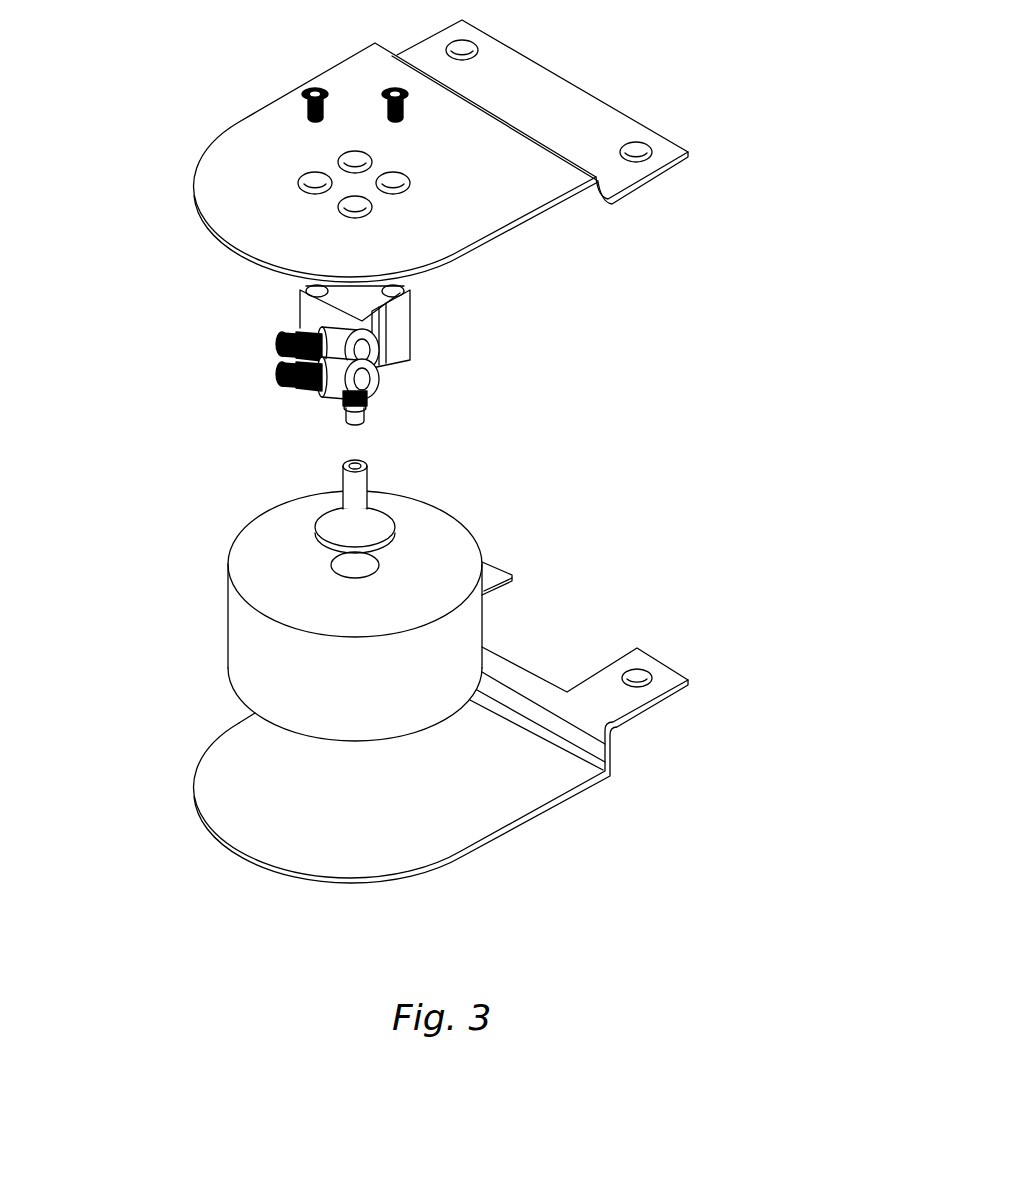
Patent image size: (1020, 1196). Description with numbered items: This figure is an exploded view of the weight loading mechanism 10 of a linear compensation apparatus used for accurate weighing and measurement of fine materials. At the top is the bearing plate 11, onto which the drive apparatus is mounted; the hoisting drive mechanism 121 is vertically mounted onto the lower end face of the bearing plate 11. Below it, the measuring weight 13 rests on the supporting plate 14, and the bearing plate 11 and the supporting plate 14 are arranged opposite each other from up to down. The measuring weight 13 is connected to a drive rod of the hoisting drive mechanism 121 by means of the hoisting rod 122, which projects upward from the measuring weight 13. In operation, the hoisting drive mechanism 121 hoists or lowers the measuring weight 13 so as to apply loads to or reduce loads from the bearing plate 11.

The weight loading mechanism 10 is at (136, 268).
The bearing plate 11 is at (258, 137).
The hoisting drive mechanism 121 is at (274, 367).
The hoisting rod 122 is at (334, 523).
The measuring weight 13 is at (275, 590).
The supporting plate 14 is at (489, 798).